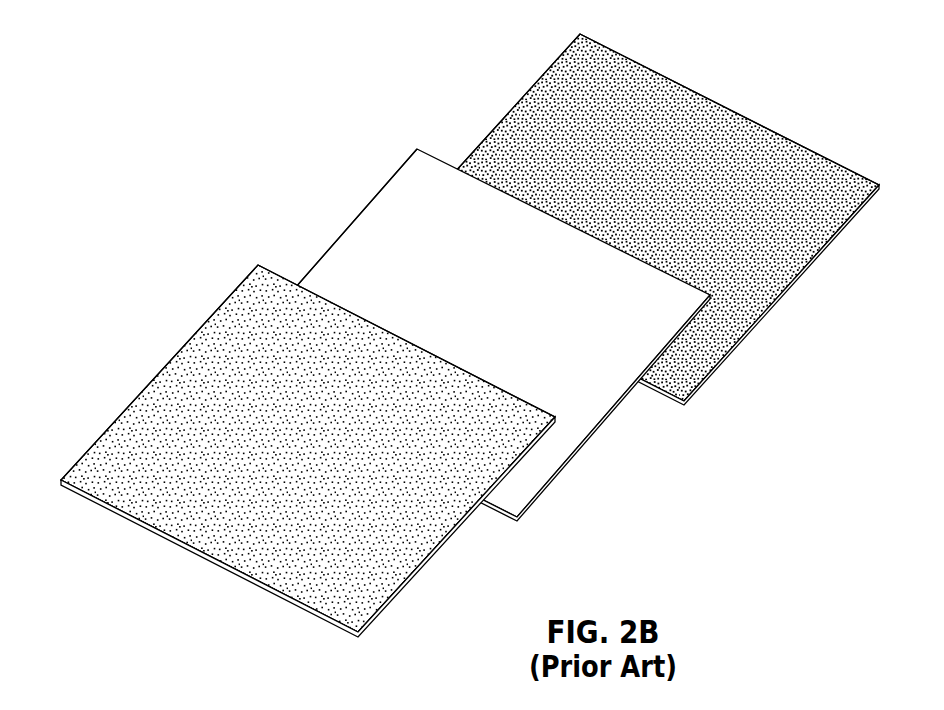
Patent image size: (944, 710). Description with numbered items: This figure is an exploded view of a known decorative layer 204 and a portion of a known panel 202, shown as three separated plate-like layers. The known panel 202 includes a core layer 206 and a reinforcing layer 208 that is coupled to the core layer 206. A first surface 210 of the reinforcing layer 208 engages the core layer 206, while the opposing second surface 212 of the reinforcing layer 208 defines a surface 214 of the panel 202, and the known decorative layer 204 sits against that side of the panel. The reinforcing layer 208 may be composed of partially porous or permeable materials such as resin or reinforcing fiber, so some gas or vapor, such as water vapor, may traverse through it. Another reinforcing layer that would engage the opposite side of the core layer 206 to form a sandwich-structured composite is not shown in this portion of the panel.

The known panel 202 is at (398, 122).
The known decorative layer 204 is at (125, 432).
The core layer 206 is at (632, 259).
The reinforcing layer 208 is at (467, 335).
The first surface 210 is at (637, 390).
The second surface 212 is at (582, 412).
The surface of the panel 214 is at (315, 270).